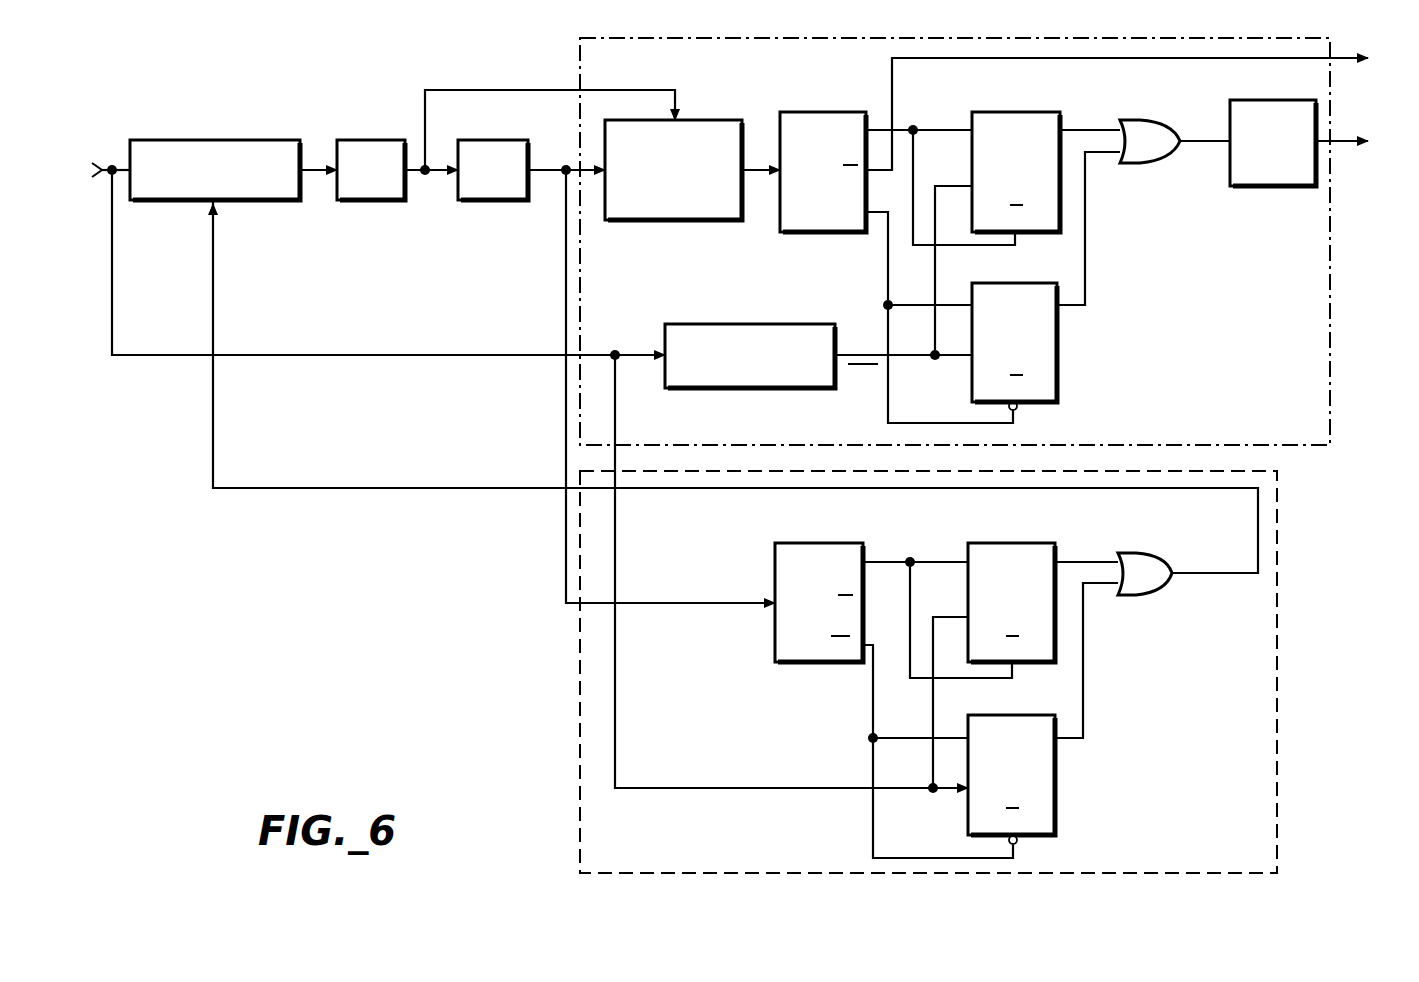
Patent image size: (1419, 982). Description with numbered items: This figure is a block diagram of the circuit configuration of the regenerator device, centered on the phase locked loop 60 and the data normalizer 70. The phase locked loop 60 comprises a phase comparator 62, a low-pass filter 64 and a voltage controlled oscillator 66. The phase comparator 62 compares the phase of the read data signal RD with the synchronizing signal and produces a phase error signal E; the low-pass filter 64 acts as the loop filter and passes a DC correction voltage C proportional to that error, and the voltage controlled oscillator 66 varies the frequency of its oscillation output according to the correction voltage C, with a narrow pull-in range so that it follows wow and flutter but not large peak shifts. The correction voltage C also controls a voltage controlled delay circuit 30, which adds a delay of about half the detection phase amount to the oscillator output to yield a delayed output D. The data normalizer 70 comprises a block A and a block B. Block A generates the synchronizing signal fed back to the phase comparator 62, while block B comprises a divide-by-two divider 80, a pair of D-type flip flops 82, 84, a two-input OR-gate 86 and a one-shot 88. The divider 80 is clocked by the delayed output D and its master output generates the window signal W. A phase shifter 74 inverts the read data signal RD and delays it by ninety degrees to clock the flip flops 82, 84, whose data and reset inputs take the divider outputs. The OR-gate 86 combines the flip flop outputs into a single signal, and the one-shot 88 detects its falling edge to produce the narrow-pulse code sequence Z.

The phase locked loop 60 is at (303, 610).
The phase comparator 62 is at (252, 140).
The low-pass filter 64 is at (346, 140).
The voltage controlled oscillator 66 is at (466, 140).
The voltage control delay circuit 30 is at (698, 120).
The data normalizer 70 is at (1285, 450).
The phase shifter 74 is at (780, 324).
The divide-by-two divider 80 is at (800, 112).
The D-type flip flop 82 is at (1000, 283).
The D-type flip flop 84 is at (1000, 112).
The two-input OR-gate 86 is at (1137, 122).
The one-shot 88 is at (1252, 100).